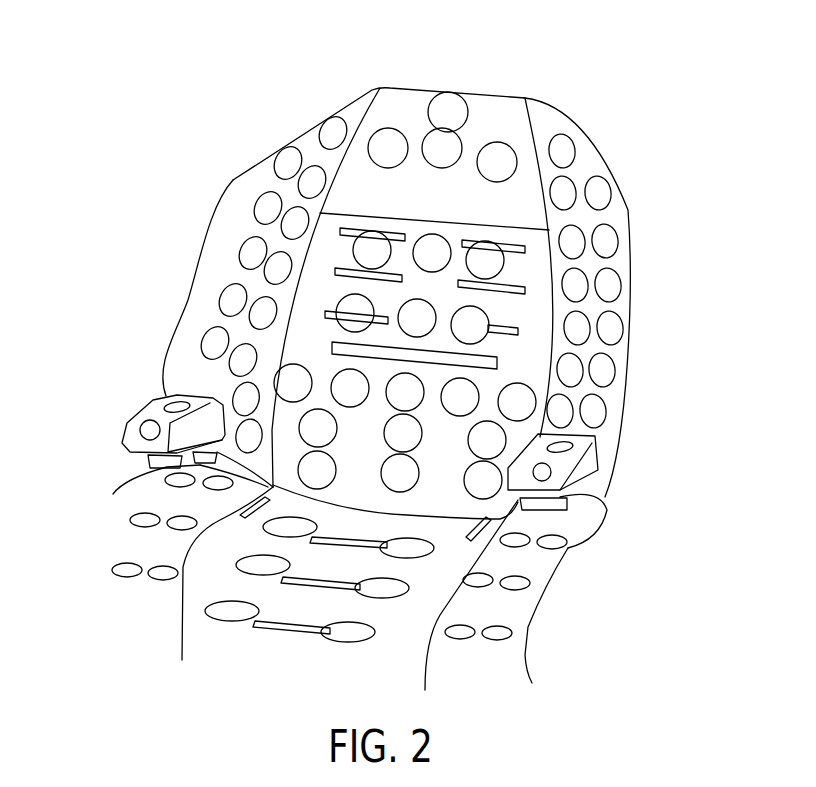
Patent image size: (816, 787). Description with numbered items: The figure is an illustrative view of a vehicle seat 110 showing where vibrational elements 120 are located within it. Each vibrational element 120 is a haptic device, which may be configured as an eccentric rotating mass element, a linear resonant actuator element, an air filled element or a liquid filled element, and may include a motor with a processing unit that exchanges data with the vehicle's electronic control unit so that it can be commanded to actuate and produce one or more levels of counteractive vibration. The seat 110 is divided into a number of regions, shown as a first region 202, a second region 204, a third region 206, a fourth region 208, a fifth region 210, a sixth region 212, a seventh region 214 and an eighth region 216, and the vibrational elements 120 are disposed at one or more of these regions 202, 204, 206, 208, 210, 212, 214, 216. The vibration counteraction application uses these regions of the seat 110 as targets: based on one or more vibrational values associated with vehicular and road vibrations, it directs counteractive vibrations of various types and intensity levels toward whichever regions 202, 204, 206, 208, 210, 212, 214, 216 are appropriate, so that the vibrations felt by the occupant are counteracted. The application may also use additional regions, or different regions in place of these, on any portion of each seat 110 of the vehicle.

The seat 110 is at (489, 46).
The region of the seat 202 is at (403, 103).
The vibrational element 120 is at (498, 158).
The region of the seat 216 is at (330, 222).
The region of the seat 208 is at (493, 382).
The region of the seat 204 is at (243, 193).
The region of the seat 206 is at (630, 203).
The region of the seat 212 is at (135, 496).
The region of the seat 210 is at (578, 547).
The region of the seat 214 is at (420, 606).